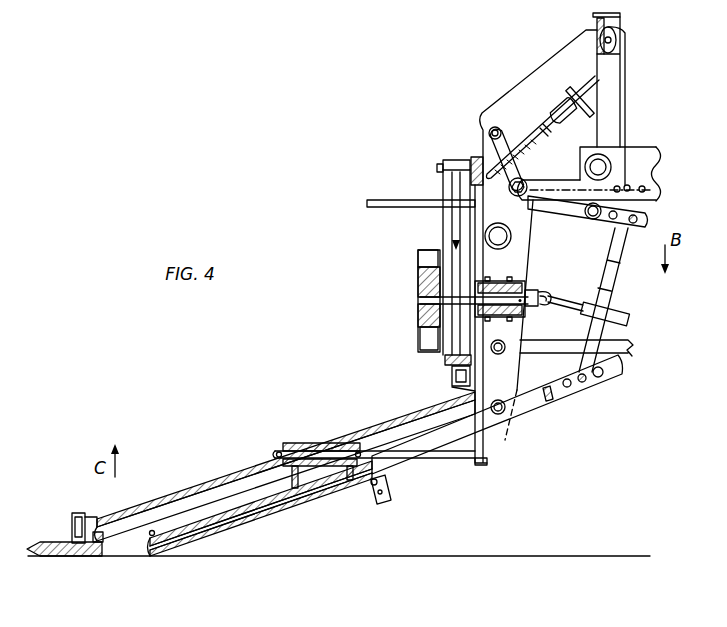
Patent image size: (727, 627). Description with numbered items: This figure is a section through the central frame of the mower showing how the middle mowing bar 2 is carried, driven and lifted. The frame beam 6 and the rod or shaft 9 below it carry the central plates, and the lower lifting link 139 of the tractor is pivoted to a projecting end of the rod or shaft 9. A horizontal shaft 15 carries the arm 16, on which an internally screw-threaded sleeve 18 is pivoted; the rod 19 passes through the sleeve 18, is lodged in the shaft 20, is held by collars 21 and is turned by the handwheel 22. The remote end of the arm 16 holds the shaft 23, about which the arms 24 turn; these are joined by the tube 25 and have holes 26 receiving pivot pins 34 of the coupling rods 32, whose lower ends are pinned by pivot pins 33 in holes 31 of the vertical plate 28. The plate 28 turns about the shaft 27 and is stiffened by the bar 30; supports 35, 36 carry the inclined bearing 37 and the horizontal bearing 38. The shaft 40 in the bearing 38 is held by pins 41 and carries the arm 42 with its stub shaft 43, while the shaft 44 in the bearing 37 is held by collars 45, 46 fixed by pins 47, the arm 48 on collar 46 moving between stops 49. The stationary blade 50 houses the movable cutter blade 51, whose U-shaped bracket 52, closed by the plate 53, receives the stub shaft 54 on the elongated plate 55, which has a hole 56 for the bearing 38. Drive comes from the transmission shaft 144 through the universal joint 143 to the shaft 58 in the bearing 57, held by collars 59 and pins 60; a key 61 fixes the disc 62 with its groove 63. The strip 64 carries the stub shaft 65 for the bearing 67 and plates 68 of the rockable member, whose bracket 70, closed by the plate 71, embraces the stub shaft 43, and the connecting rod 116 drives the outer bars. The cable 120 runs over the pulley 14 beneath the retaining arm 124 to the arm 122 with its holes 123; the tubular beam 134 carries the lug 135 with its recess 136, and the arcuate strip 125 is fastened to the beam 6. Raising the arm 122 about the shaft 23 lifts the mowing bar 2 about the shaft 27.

The mowing bar 2 is at (40, 547).
The horizontal frame beam 6 is at (510, 241).
The horizontal rod or shaft 9 is at (499, 354).
The pulley 14 is at (622, 46).
The horizontal shaft 15 is at (485, 120).
The arm 16 is at (489, 133).
The internally screw-threaded sleeve 18 is at (514, 170).
The rod 19 is at (544, 143).
The shaft 20 is at (575, 128).
The collar 21 is at (560, 116).
The handwheel 22 is at (578, 90).
The shaft 23 is at (511, 191).
The arm 24 is at (575, 212).
The tube 25 is at (589, 219).
The hole 26 is at (612, 221).
The shaft 27 is at (502, 414).
The vertical plate 28 is at (530, 405).
The bar 30 is at (552, 395).
The hole 31 is at (604, 373).
The coupling rod 32 is at (620, 297).
The horizontal pivot pin 33 is at (578, 384).
The horizontal pivot pin 34 is at (638, 220).
The support 35 is at (274, 456).
The support 36 is at (352, 476).
The bearing 37 is at (268, 512).
The second bearing 38 is at (318, 443).
The shaft 40 is at (445, 460).
The transverse pin 41 is at (277, 452).
The arm 42 is at (487, 465).
The journal or stub shaft 43 is at (452, 380).
The shaft 44 is at (228, 518).
The collar or ring 45 is at (162, 546).
The collar or ring 46 is at (378, 482).
The small transverse pin 47 is at (384, 492).
The arm 48 is at (386, 503).
The stop 49 is at (373, 500).
The stationary blade 50 is at (55, 556).
The cutter blade 51 is at (97, 556).
The U-shaped bracket 52 is at (79, 513).
The plate 53 is at (72, 528).
The journal or stub shaft 54 is at (90, 519).
The elongated plate 55 is at (195, 504).
The hole 56 is at (352, 443).
The horizontal bearing 57 is at (508, 280).
The horizontal shaft 58 is at (420, 298).
The collar or ring 59 is at (527, 284).
The small transverse pin 60 is at (478, 293).
The key 61 is at (418, 280).
The circular disc 62 is at (418, 260).
The groove or track 63 is at (420, 338).
The vertically disposed strip 64 is at (476, 157).
The stub shaft or journal 65 is at (437, 167).
The horizontal bearing 67 is at (455, 160).
The plate 68 is at (447, 185).
The U-shaped bracket 70 is at (445, 363).
The vertical plate 71 is at (452, 387).
The connecting rod 116 is at (453, 243).
The cable 120 is at (627, 112).
The arm 122 is at (662, 192).
The hole 123 is at (645, 192).
The retaining arm 124 is at (597, 27).
The arcuate strip 125 is at (370, 204).
The tubular beam 134 is at (585, 168).
The lug or plate 135 is at (637, 147).
The concave recess 136 is at (657, 152).
The lower lifting link 139 is at (633, 354).
The universal joint 143 is at (551, 297).
The transmission shaft 144 is at (629, 320).